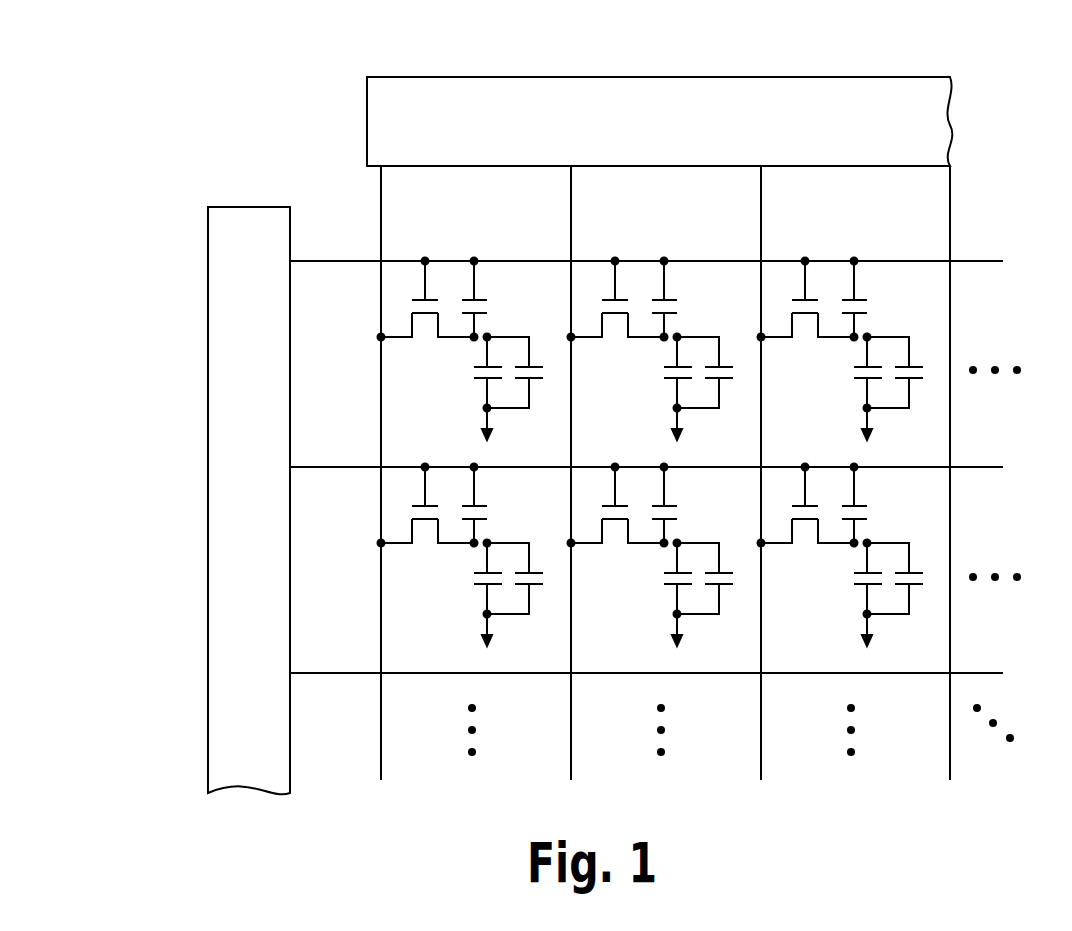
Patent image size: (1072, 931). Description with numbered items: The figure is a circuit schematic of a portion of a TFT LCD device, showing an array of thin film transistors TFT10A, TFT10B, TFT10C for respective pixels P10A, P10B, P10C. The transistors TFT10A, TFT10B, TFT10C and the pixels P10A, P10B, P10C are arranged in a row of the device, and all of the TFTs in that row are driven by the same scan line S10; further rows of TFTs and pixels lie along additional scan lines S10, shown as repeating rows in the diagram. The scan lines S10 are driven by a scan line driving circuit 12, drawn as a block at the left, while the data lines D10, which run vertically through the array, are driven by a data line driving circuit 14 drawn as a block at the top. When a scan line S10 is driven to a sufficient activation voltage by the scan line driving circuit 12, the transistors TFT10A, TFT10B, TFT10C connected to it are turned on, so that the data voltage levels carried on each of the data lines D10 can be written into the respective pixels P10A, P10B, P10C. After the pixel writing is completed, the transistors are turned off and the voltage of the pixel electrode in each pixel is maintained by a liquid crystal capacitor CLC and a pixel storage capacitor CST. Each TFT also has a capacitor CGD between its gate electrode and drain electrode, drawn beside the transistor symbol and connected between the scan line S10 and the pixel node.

The scan line driving circuit 12 is at (208, 257).
The data line driving circuit 14 is at (750, 80).
The data line D10 is at (381, 228).
The scan line S10 is at (972, 673).
The thin film transistor TFT10A is at (412, 299).
The thin film transistor TFT10B is at (605, 298).
The thin film transistor TFT10C is at (795, 298).
The gate-drain capacitor CGD is at (483, 300).
The liquid crystal capacitor CLC is at (480, 380).
The pixel storage capacitor CST is at (535, 380).
The pixel P10A is at (431, 355).
The pixel P10B is at (617, 335).
The pixel P10C is at (807, 335).